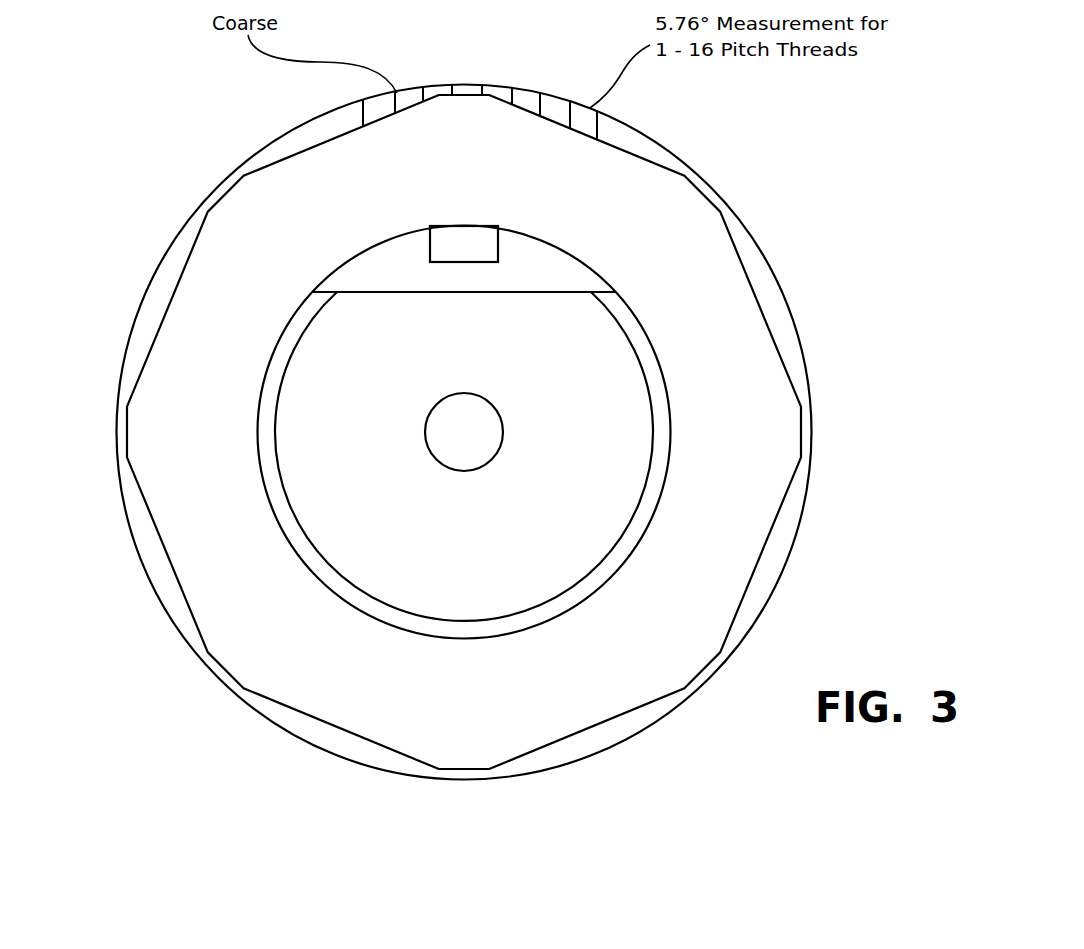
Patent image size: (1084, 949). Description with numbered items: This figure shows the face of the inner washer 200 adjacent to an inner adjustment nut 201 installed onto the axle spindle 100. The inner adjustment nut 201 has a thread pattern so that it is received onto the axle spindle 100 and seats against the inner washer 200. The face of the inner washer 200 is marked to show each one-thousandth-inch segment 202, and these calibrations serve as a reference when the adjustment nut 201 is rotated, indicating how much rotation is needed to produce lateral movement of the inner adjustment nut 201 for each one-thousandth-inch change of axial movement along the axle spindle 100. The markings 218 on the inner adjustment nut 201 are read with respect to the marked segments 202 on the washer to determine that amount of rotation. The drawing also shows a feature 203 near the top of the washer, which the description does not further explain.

The insert 100 is at (325, 382).
The nut body 200 is at (647, 135).
The polygonal outer surface 201 is at (720, 197).
The thread pitch marks 202 is at (473, 84).
The notch 203 is at (455, 242).
The flat face 218 is at (448, 106).